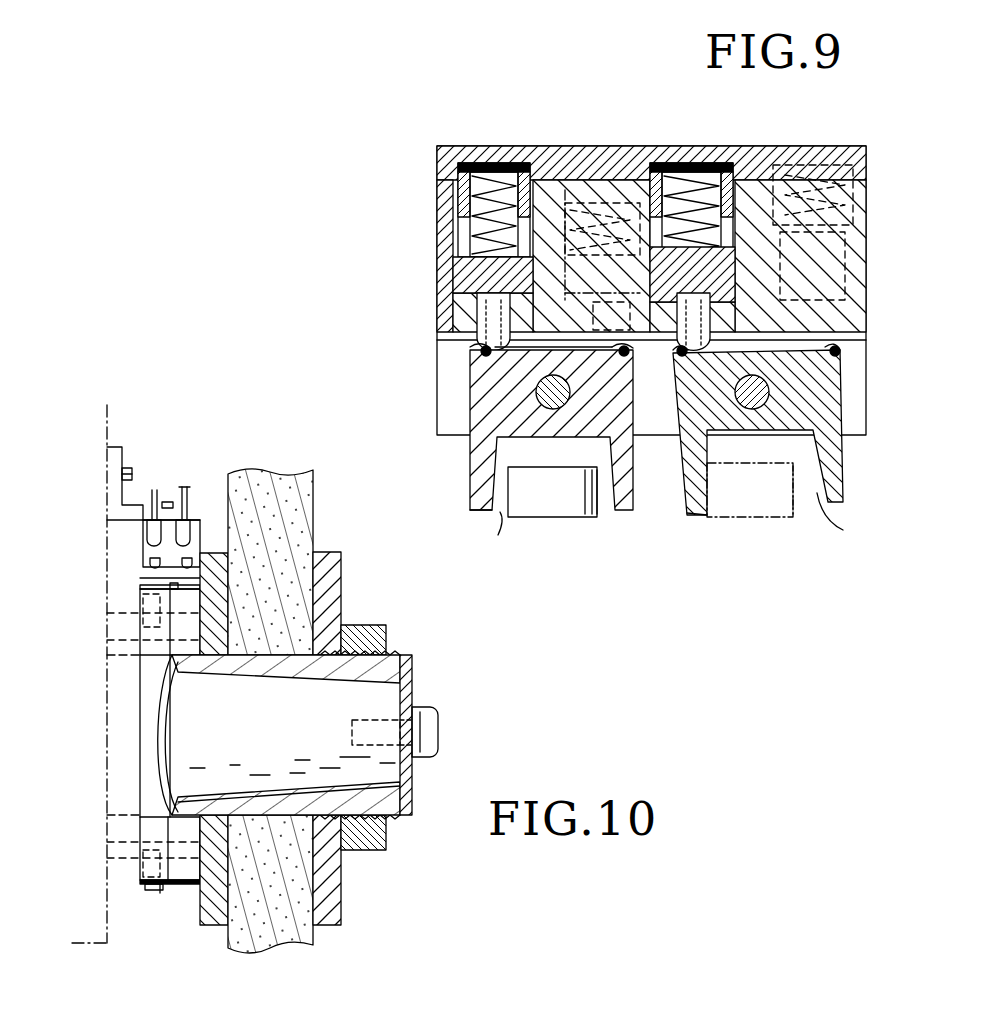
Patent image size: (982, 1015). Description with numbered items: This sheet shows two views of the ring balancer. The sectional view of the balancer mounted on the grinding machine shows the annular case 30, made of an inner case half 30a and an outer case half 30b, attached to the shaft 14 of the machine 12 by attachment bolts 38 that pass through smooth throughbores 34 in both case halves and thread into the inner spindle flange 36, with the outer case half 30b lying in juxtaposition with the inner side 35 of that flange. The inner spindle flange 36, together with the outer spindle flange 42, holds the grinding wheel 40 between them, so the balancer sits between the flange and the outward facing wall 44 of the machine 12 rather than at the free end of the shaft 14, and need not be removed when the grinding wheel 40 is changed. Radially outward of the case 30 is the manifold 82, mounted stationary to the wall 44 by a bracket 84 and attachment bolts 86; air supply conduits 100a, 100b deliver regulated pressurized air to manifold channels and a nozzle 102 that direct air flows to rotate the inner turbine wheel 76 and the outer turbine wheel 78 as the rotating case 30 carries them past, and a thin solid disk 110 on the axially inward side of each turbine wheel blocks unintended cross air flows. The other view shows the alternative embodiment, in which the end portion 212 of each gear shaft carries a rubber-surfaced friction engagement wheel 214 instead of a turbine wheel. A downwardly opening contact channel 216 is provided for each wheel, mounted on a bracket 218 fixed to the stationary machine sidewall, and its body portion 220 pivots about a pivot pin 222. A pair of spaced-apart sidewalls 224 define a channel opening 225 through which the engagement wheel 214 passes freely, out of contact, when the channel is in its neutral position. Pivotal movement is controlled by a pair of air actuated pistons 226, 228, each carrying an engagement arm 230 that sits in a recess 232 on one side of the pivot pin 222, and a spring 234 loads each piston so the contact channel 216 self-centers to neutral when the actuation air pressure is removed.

In FIG. 9, the end portion 212 is at (548, 518).
In FIG. 9, the friction engagement wheel 214 is at (600, 518).
In FIG. 9, the contact channel 216 is at (482, 372).
In FIG. 9, the bracket 218 is at (462, 312).
In FIG. 9, the body portion 220 is at (483, 400).
In FIG. 9, the pivot pin 222 is at (553, 410).
In FIG. 9, the sidewalls 224 is at (478, 512).
In FIG. 9, the channel opening 225 is at (683, 530).
In FIG. 9, the air actuated piston 226 is at (465, 270).
In FIG. 9, the air actuated piston 228 is at (585, 215).
In FIG. 9, the engagement arm 230 is at (475, 308).
In FIG. 9, the recess 232 is at (482, 350).
In FIG. 9, the spring 234 is at (614, 145).
In FIG. 10, the machine 12 is at (107, 940).
In FIG. 10, the shaft 14 is at (405, 778).
In FIG. 10, the annular case 30 is at (143, 868).
In FIG. 10, the inner case half 30a is at (150, 890).
In FIG. 10, the outer case half 30b is at (192, 882).
In FIG. 10, the throughbores 34 is at (112, 655).
In FIG. 10, the inner side 35 is at (300, 910).
In FIG. 10, the inner spindle flange 36 is at (214, 553).
In FIG. 10, the attachment bolts 38 is at (143, 614).
In FIG. 10, the grinding wheel 40 is at (305, 490).
In FIG. 10, the outer spindle flange 42 is at (330, 578).
In FIG. 10, the outward facing wall 44 is at (108, 430).
In FIG. 10, the inner turbine wheel 76 is at (160, 893).
In FIG. 10, the outer turbine wheel 78 is at (140, 578).
In FIG. 10, the manifold 82 is at (145, 535).
In FIG. 10, the bracket 84 is at (108, 462).
In FIG. 10, the attachment bolts 86 is at (122, 474).
In FIG. 10, the air supply conduit 100a is at (185, 487).
In FIG. 10, the air supply conduit 100b is at (155, 490).
In FIG. 10, the nozzle 102 is at (150, 562).
In FIG. 10, the thin solid disk 110 is at (140, 587).